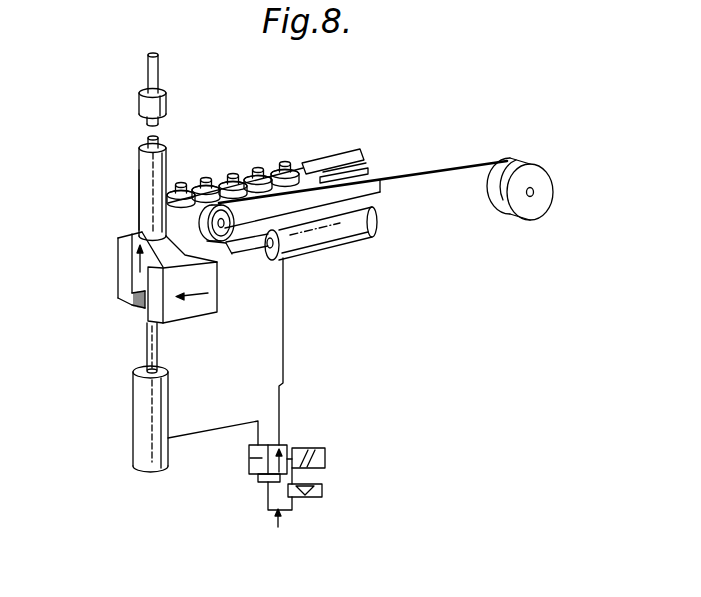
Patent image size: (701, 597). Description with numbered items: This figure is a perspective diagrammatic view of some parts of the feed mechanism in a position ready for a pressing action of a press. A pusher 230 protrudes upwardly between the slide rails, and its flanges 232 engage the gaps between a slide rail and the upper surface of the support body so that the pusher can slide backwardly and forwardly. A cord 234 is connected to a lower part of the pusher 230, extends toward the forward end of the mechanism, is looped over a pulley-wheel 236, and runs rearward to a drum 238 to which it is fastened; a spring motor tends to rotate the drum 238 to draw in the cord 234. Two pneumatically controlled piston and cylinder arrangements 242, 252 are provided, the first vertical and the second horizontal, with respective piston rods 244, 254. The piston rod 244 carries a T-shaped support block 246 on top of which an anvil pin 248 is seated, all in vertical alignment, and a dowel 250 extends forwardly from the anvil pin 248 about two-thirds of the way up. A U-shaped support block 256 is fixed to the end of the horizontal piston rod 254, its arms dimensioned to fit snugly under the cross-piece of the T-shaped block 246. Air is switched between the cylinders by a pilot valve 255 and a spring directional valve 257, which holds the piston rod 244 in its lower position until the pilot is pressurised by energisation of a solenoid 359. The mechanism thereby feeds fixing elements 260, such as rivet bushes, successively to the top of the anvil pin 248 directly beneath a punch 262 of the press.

The pusher 230 is at (330, 148).
The flanges 232 is at (367, 168).
The cord 234 is at (260, 191).
The pulley-wheel 236 is at (232, 242).
The drum 238 is at (542, 175).
The piston and cylinder arrangement 242 is at (138, 417).
The piston rod 244 is at (149, 334).
The T-shaped support block 246 is at (127, 242).
The anvil pin 248 is at (147, 213).
The dowel 250 is at (139, 193).
The piston and cylinder arrangement 252 is at (340, 235).
The piston rod 254 is at (222, 261).
The pilot valve 255 is at (327, 456).
The U-shaped support block 256 is at (187, 313).
The spring directional valve 257 is at (248, 460).
The fixing elements 260 is at (141, 150).
The punch 262 is at (147, 73).
The solenoid 359 is at (322, 490).